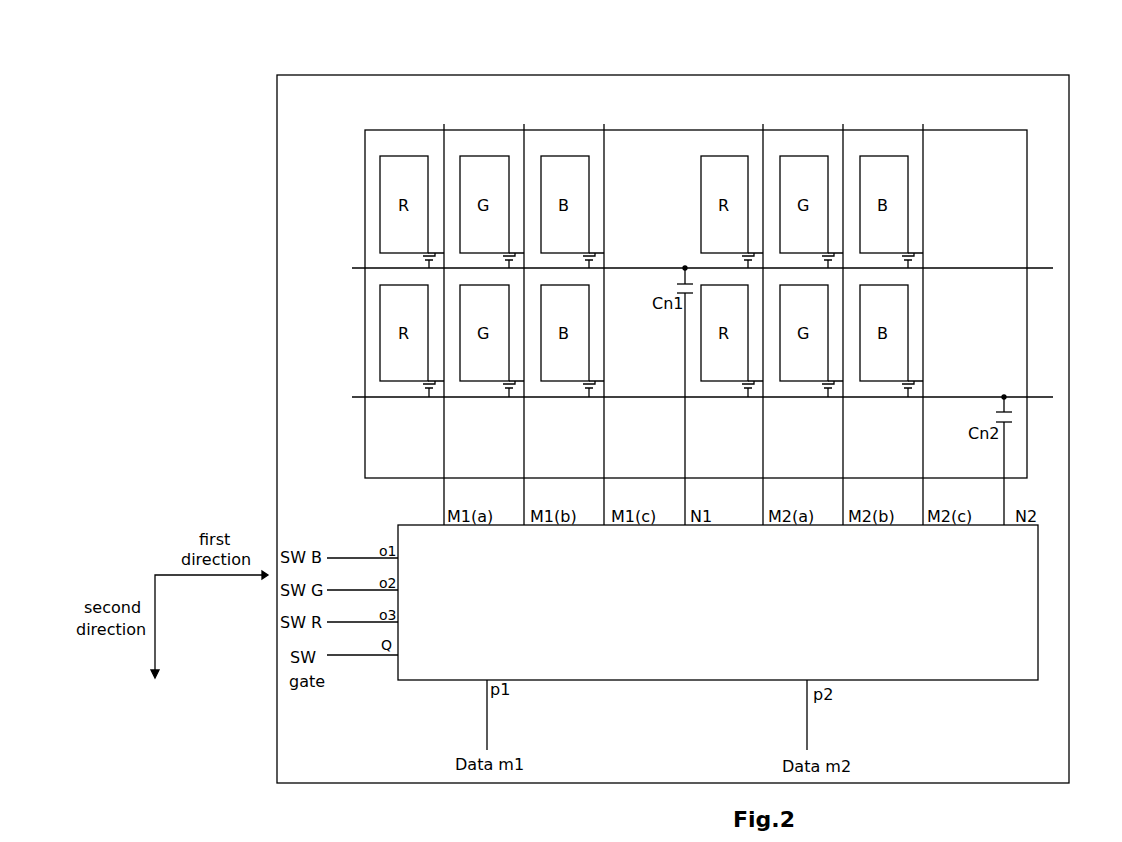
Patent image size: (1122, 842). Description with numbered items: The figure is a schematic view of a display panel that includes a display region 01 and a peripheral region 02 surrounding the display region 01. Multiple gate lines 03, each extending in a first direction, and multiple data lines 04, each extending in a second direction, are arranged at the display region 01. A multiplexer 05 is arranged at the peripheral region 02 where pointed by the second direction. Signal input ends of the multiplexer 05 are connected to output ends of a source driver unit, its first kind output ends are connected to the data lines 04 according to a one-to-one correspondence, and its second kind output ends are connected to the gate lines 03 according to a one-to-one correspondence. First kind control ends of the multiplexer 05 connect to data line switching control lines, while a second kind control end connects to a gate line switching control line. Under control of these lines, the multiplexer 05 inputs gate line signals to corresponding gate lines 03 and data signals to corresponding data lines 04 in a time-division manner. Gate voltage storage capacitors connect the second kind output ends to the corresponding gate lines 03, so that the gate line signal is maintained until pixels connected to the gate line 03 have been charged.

The display region 01 is at (978, 130).
The peripheral region 02 is at (1053, 235).
The gate lines 03 is at (316, 261).
The data lines 04 is at (942, 104).
The multiplexer 05 is at (943, 680).